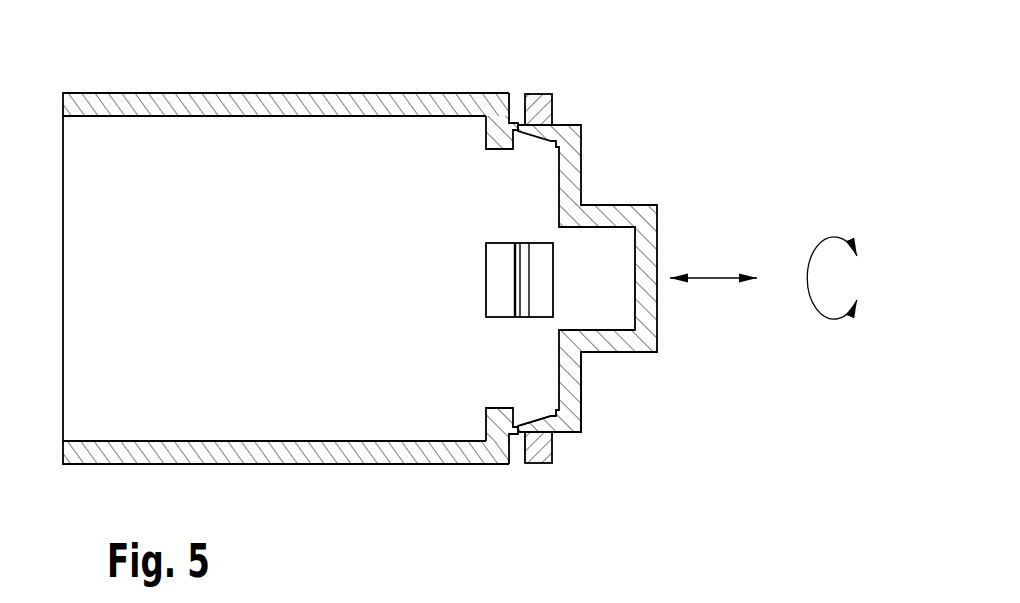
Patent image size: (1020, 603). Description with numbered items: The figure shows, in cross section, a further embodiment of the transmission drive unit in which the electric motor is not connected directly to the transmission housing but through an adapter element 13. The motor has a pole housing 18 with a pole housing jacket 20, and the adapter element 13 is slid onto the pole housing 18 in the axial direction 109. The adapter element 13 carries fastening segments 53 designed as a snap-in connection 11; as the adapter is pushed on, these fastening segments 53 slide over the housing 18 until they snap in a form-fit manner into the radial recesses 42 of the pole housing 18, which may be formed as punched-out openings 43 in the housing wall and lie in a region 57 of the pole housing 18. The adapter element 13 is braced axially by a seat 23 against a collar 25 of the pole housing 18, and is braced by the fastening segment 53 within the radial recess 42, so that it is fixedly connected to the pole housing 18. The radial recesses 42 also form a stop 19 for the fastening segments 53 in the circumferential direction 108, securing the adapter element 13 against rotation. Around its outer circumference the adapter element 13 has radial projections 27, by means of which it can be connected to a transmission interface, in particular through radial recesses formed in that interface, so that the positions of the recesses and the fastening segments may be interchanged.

The pole housing 18 is at (205, 80).
The pole housing jacket 20 is at (305, 98).
The seat 23 is at (483, 98).
The collar 25 is at (495, 133).
The radial projections 27 is at (540, 104).
The snap-in connection 11 is at (582, 111).
The fastening segments 53 is at (540, 422).
The region of pole housing 57 is at (588, 429).
The adapter element 13 is at (548, 444).
The stop 19 is at (540, 313).
The radial recess 42 is at (446, 280).
The punched-out opening 43 is at (533, 145).
The axial direction 109 is at (716, 278).
The circumferential direction 108 is at (815, 250).